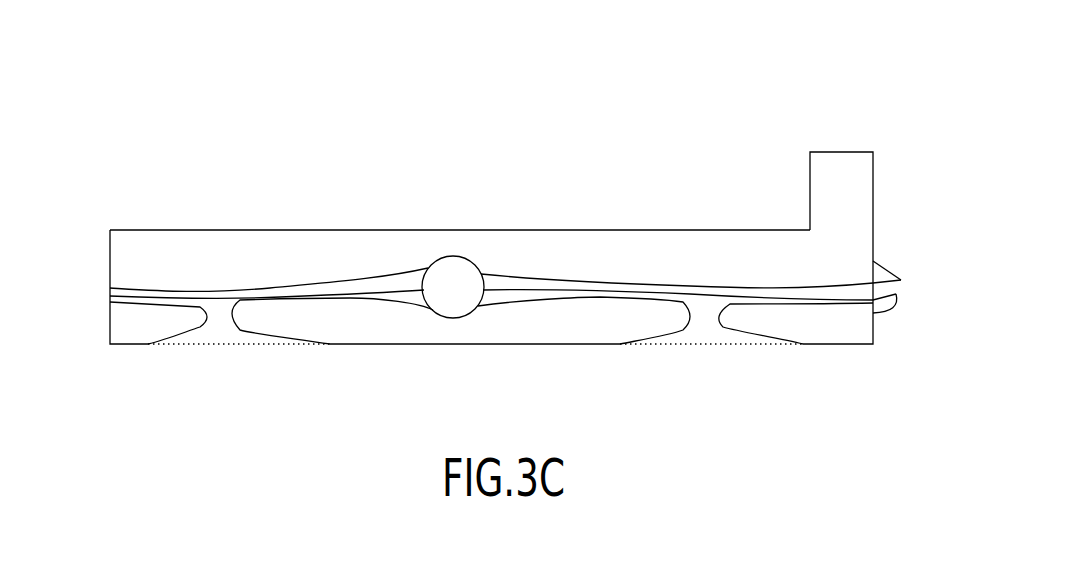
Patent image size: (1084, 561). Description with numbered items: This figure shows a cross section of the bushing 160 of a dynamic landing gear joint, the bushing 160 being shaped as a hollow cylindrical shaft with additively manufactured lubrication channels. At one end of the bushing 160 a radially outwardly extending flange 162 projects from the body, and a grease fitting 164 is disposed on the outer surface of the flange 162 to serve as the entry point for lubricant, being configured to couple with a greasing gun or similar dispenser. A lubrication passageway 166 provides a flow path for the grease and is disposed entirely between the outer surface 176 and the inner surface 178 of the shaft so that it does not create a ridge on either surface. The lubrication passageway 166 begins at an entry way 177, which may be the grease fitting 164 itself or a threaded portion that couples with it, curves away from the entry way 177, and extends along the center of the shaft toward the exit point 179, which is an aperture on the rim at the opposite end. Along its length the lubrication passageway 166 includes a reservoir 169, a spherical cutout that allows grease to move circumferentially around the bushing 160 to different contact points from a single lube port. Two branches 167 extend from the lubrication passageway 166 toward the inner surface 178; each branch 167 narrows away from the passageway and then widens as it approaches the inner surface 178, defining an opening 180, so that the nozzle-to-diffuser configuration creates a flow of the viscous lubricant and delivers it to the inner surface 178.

The bushing 160 is at (246, 188).
The flange 162 is at (862, 151).
The grease fitting 164 is at (889, 270).
The lubrication passageway 166 is at (527, 282).
The branch 167 is at (213, 310).
The reservoir 169 is at (440, 258).
The outer surface 176 is at (548, 231).
The entry way 177 is at (899, 293).
The inner surface 178 is at (418, 344).
The exit point 179 is at (113, 290).
The opening 180 is at (277, 340).